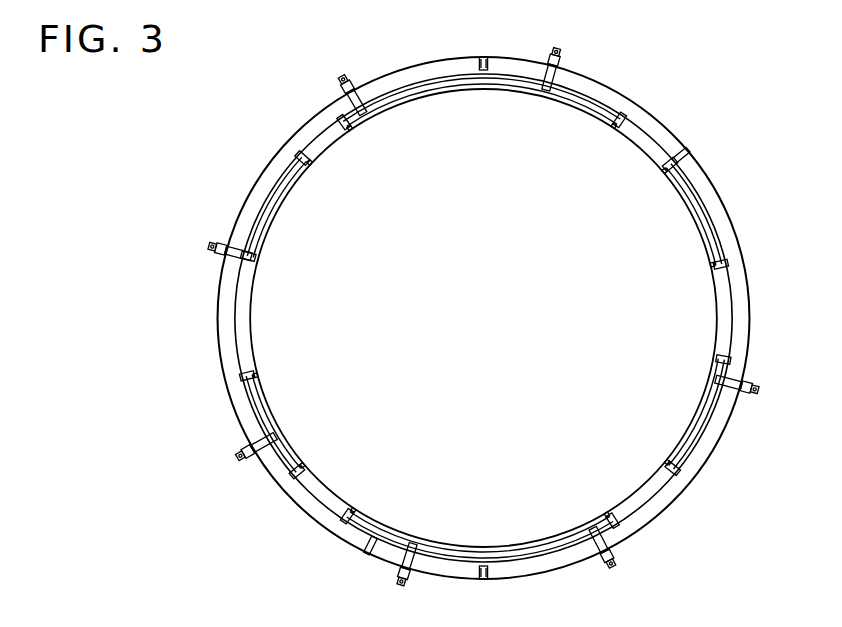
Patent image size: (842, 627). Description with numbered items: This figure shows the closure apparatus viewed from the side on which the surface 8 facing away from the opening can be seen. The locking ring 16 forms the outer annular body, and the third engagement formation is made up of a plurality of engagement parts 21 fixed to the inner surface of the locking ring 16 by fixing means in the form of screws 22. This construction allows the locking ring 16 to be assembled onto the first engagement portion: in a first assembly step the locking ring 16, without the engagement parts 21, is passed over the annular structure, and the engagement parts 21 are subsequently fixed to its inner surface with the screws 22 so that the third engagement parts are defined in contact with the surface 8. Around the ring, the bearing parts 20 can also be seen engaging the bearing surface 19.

The surface 8 is at (243, 333).
The locking ring 16 is at (714, 193).
The bearing surface 19 is at (640, 133).
The bearing parts 20 is at (341, 76).
The engagement parts 21 is at (258, 218).
The screws 22 is at (292, 152).